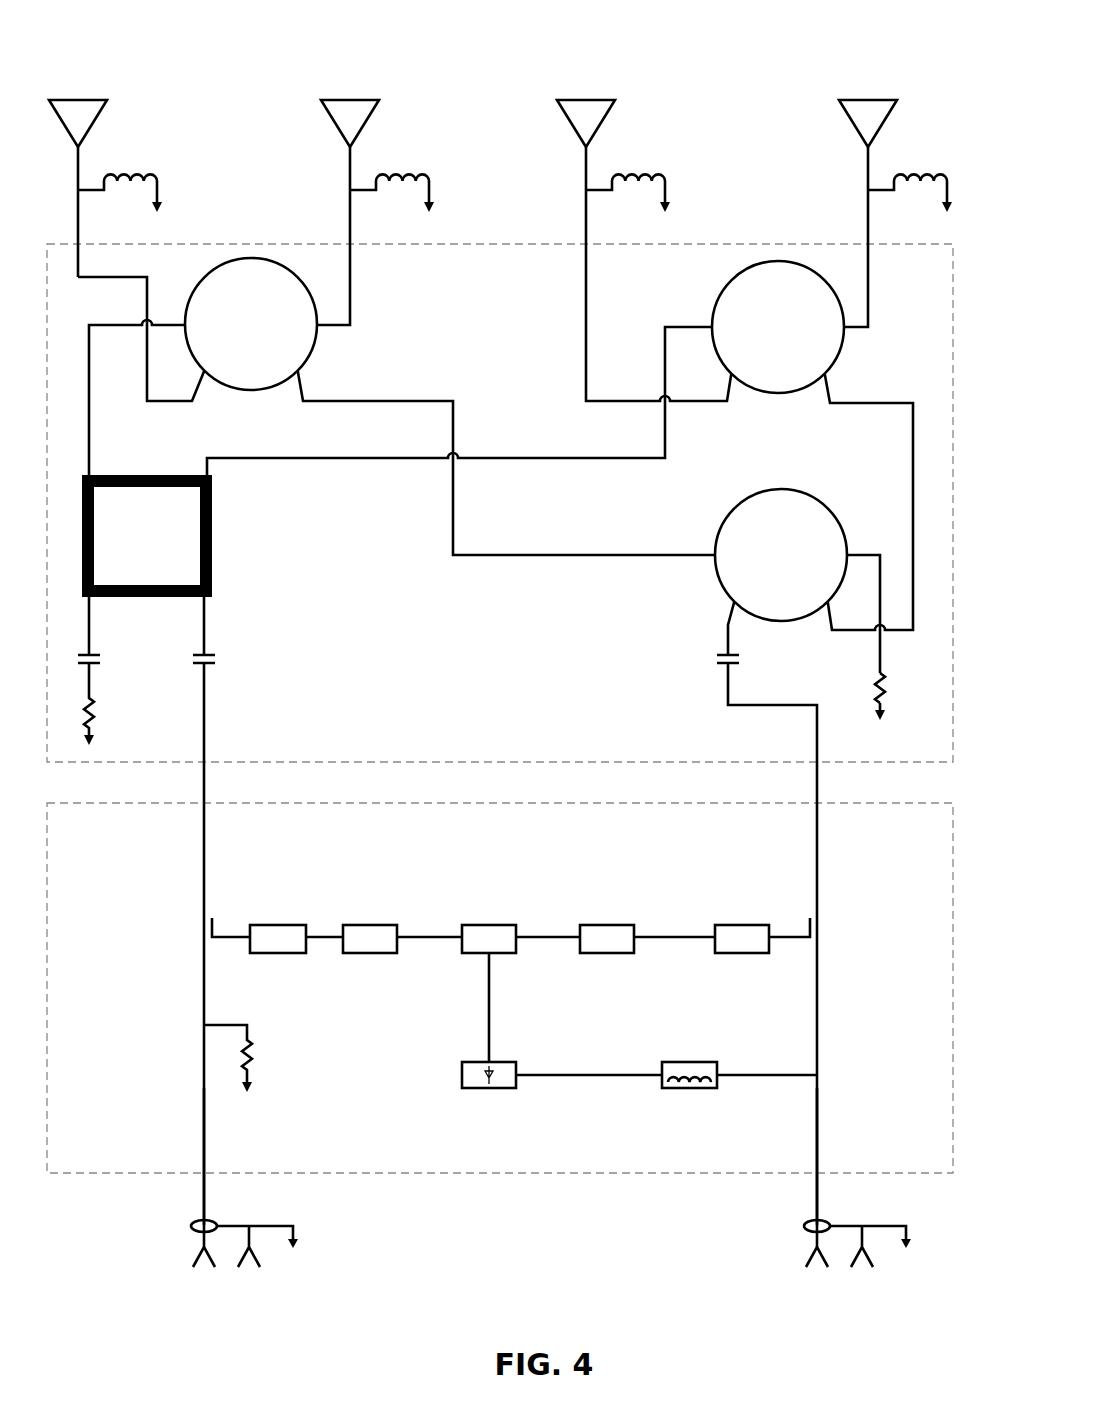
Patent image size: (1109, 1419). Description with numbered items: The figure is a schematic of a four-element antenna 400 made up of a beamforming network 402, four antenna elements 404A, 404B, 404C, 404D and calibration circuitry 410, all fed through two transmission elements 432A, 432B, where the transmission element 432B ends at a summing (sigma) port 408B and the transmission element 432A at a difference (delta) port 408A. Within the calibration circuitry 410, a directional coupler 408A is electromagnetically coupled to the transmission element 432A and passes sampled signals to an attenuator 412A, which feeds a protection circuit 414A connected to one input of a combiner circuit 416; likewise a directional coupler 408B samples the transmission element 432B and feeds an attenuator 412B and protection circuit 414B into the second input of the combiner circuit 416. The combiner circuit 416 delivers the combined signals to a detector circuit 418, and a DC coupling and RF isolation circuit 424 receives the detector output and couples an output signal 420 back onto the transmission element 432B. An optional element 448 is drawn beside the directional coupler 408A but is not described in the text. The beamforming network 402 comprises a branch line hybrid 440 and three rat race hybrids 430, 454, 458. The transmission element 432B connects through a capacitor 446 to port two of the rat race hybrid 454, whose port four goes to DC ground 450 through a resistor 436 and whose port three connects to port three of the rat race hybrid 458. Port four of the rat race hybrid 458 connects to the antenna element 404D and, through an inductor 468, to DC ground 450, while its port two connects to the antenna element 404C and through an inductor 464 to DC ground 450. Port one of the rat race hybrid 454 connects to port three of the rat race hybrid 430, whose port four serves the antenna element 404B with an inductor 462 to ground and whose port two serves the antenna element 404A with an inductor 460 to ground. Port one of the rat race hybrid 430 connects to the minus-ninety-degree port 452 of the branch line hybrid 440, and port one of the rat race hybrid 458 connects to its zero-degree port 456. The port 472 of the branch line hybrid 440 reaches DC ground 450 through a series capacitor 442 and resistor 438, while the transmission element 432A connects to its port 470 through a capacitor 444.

The antenna 400 is at (838, 17).
The beamforming network 402 is at (505, 719).
The antenna element 404A is at (95, 144).
The antenna element 404B is at (360, 168).
The antenna element 404C is at (636, 206).
The antenna element 404D is at (832, 120).
The directional coupler 408A is at (183, 936).
The directional coupler 408B is at (857, 936).
The calibration circuitry 410 is at (501, 827).
The attenuator 412A is at (279, 910).
The attenuator 412B is at (740, 910).
The protection circuit 414A is at (399, 987).
The protection circuit 414B is at (636, 984).
The combiner circuit 416 is at (510, 960).
The detector circuit 418 is at (552, 1112).
The output signal 420 is at (790, 1062).
The DC coupling and RF isolation circuit 424 is at (690, 1114).
The rat race hybrid 430 is at (396, 406).
The transmission element 432A is at (219, 1137).
The transmission element 432B is at (801, 1164).
The resistor 436 is at (902, 688).
The resistor 438 is at (107, 704).
The branch line hybrid 440 is at (147, 536).
The capacitor 442 is at (115, 661).
The capacitor 444 is at (226, 661).
The capacitor 446 is at (767, 950).
The optional resistor 448 is at (277, 1058).
The DC ground 450 is at (525, 462).
The −90° port 452 is at (128, 397).
The rat race hybrid 454 is at (783, 581).
The 0° port 456 is at (459, 403).
The rat race hybrid 458 is at (797, 445).
The inductor 460 is at (487, 448).
The inductor 462 is at (392, 178).
The inductor 464 is at (628, 178).
The inductor 468 is at (910, 178).
The port 470 is at (224, 922).
The port 472 is at (109, 626).